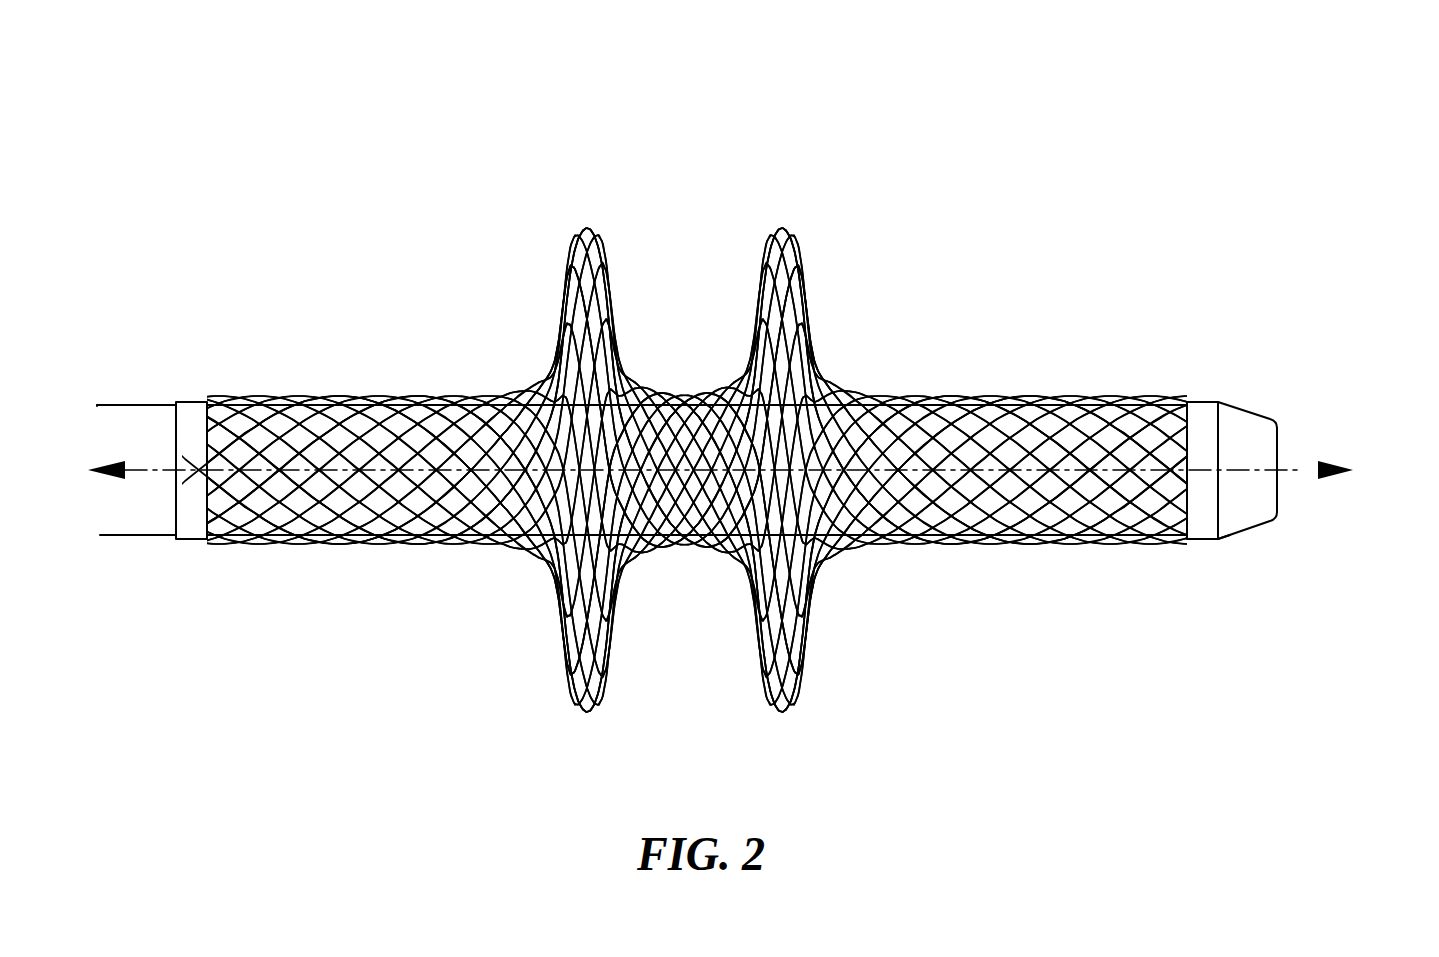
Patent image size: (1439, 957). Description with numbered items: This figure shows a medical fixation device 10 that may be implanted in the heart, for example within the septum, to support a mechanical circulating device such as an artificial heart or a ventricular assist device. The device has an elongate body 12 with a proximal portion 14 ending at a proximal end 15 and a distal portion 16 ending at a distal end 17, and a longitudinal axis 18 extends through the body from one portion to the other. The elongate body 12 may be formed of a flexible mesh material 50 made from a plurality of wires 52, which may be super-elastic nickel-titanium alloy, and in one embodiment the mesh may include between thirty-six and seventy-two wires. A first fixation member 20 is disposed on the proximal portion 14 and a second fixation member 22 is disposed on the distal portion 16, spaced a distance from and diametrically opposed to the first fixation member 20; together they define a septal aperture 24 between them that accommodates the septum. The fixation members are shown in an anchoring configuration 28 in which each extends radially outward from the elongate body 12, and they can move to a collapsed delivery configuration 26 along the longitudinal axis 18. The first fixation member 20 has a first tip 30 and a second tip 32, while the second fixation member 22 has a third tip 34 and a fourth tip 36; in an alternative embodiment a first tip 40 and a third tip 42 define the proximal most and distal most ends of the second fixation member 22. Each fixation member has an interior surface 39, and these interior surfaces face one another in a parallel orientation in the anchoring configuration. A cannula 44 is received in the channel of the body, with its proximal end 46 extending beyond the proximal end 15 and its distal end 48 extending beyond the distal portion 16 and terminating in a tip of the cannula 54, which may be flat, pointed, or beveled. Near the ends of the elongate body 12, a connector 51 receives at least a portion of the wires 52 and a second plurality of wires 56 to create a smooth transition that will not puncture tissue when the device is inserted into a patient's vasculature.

The medical fixation device 10 is at (962, 194).
The elongate body 12 is at (213, 136).
The proximal portion 14 is at (545, 355).
The proximal end 15 is at (208, 542).
The distal portion 16 is at (827, 355).
The distal end 17 is at (1245, 540).
The longitudinal axis 18 is at (147, 470).
The first fixation member 20 is at (584, 720).
The second fixation member 22 is at (782, 720).
The septal aperture 24 is at (758, 267).
The delivery configuration 26 is at (1345, 238).
The anchoring configuration 28 is at (785, 197).
The first tip 30 is at (570, 230).
The second tip 32 is at (570, 655).
The third tip 34 is at (795, 230).
The fourth tip 36 is at (795, 655).
The interior surface 39 is at (760, 668).
The first tip 40 is at (578, 222).
The third tip 42 is at (787, 222).
The cannula 44 is at (156, 395).
The proximal end 46 is at (126, 395).
The distal end 48 is at (1260, 403).
The mesh material 50 is at (1040, 389).
The connector 51 is at (188, 542).
The plurality of wires 52 is at (1204, 408).
The tip of the cannula 54 is at (1283, 422).
The second plurality of wires 56 is at (172, 400).